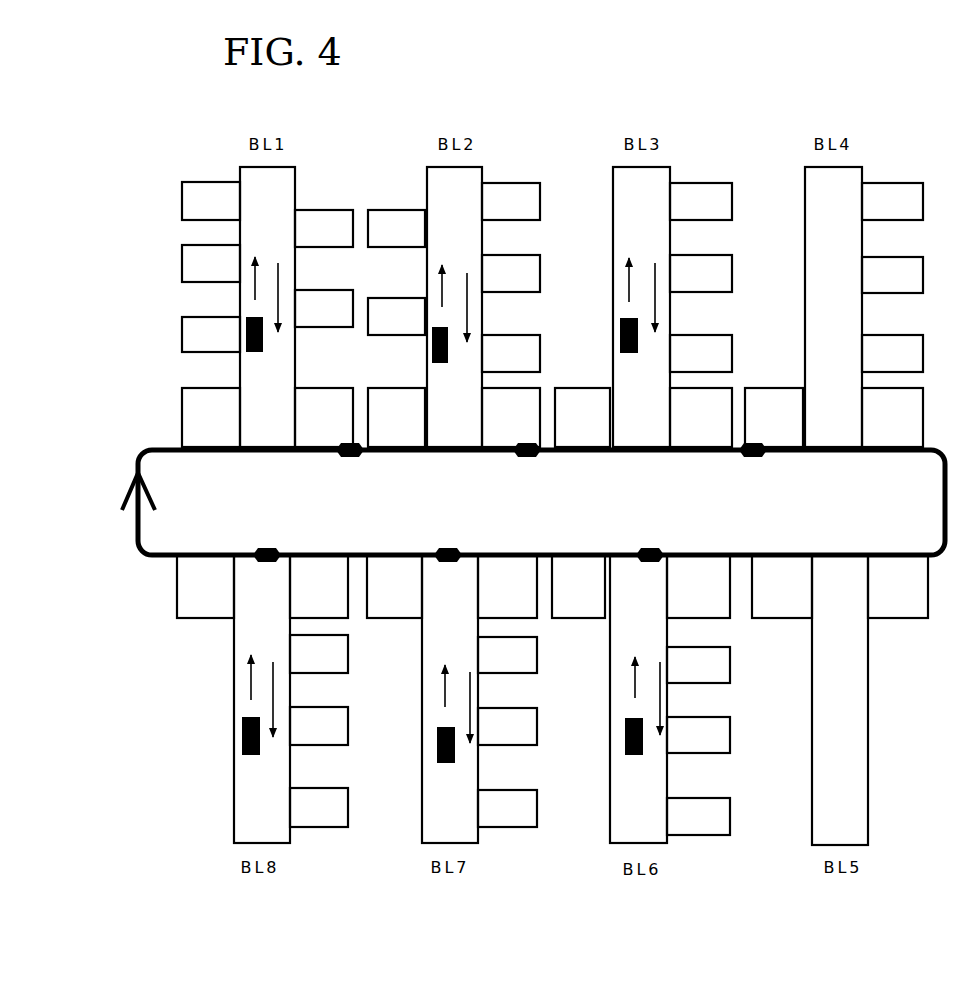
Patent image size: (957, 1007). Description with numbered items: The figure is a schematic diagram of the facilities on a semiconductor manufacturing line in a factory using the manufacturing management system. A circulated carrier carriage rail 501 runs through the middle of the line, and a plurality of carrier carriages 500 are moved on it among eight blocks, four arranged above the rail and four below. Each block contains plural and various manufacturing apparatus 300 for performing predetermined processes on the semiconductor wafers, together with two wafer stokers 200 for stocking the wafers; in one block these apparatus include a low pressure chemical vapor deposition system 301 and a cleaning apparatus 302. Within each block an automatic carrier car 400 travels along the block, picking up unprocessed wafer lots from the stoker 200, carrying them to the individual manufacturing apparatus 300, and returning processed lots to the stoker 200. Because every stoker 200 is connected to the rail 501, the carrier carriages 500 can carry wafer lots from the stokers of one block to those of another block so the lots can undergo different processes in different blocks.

The wafer stoker 200 is at (378, 392).
The manufacturing apparatus 300 is at (344, 247).
The low pressure chemical vapor deposition system 301 is at (533, 663).
The cleaning apparatus 302 is at (537, 724).
The automatic carrier car 400 is at (242, 343).
The carrier carriage 500 is at (279, 535).
The circulated carrier carriage rail 501 is at (144, 558).